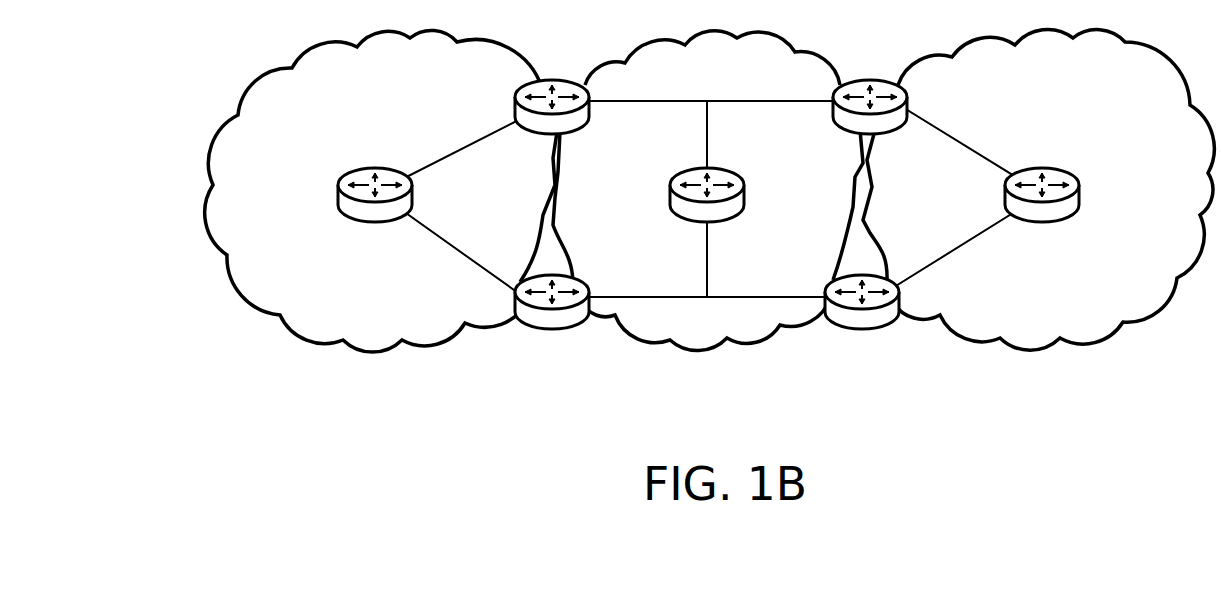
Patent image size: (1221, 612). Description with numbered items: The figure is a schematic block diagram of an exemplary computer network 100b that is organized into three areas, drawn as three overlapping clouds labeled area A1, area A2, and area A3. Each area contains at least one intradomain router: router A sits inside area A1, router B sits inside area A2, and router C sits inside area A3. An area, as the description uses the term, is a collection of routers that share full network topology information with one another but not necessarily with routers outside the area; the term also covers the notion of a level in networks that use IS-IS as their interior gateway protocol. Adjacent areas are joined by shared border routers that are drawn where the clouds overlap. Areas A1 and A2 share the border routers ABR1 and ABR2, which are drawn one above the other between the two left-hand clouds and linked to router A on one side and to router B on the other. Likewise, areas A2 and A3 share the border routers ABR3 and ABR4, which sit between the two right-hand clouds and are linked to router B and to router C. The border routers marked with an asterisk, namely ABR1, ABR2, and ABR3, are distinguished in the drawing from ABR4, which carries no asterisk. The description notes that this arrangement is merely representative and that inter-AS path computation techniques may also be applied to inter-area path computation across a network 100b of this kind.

The computer network 100b is at (710, 280).
The area A1 is at (381, 191).
The area A2 is at (720, 191).
The area A3 is at (1023, 189).
The intradomain router A is at (353, 201).
The intradomain router B is at (728, 195).
The intradomain router C is at (1061, 195).
The border router ABR1 is at (562, 77).
The border router ABR2 is at (531, 323).
The border router ABR3 is at (890, 77).
The border router ABR4 is at (868, 323).